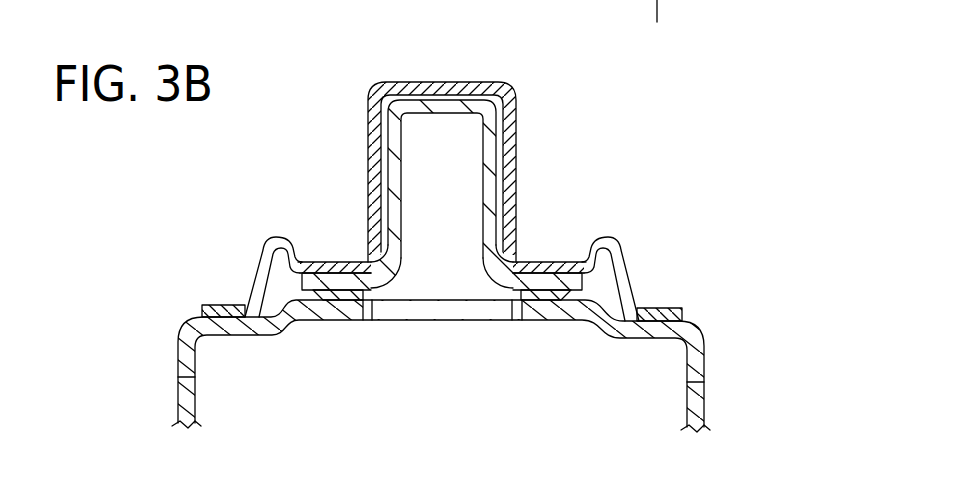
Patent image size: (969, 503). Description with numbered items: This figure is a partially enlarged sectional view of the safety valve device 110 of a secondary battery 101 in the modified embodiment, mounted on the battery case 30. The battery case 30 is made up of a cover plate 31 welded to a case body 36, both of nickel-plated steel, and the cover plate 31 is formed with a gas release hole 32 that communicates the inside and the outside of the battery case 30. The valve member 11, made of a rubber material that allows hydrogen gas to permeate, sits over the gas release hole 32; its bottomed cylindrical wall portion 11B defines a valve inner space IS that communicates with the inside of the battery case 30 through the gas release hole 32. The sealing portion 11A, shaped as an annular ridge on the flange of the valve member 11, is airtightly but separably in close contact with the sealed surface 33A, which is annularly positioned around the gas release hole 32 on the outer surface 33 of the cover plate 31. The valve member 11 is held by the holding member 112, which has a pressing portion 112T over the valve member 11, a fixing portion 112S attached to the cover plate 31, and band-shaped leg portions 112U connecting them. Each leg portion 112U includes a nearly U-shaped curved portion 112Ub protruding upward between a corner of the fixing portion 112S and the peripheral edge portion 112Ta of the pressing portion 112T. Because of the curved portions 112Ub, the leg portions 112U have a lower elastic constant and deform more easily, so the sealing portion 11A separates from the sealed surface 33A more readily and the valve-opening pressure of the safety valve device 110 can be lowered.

The secondary battery 101 is at (343, 52).
The safety valve device 110 is at (599, 77).
The holding member 112 is at (516, 86).
The pressing portion 112T is at (540, 262).
The peripheral edge portion 112Ta is at (333, 262).
The leg portion 112U is at (263, 248).
The curved portion 112Ub is at (278, 240).
The fixing portion 112S is at (662, 306).
The valve member 11 is at (492, 148).
The wall portion 11B is at (382, 138).
The sealing portion 11A is at (305, 322).
The valve inner space IS is at (457, 214).
The battery case 30 is at (752, 340).
The cover plate 31 is at (705, 357).
The case body 36 is at (705, 405).
The gas release hole 32 is at (496, 322).
The outer surface 33 is at (225, 305).
The sealed surface 33A is at (363, 322).